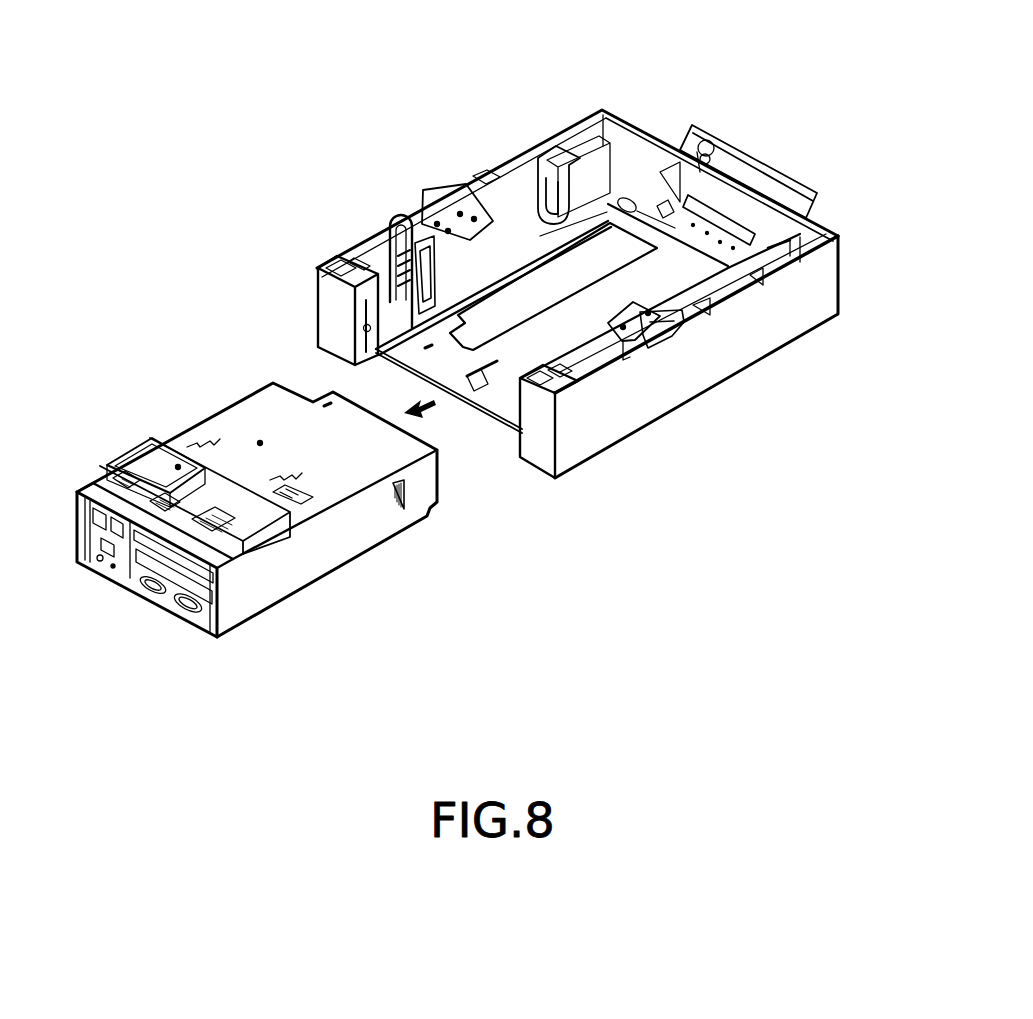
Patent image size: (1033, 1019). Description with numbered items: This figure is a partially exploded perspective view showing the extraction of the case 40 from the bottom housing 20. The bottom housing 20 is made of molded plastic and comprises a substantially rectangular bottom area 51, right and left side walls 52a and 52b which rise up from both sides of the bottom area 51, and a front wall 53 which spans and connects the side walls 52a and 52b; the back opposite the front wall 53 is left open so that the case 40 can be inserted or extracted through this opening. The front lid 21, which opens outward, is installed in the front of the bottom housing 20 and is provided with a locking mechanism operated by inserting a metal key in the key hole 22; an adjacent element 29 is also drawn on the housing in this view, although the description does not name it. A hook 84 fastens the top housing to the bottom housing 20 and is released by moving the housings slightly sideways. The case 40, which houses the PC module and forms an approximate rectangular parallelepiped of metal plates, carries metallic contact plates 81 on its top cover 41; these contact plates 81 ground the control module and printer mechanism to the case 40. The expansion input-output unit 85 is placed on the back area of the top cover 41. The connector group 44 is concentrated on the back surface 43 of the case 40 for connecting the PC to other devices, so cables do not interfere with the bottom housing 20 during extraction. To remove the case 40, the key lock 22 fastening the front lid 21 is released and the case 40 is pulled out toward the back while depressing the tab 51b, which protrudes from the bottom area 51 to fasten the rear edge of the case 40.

The bottom housing 20 is at (853, 287).
The front lid 21 is at (770, 162).
The key hole 22 is at (713, 140).
The slot 29 is at (773, 218).
The case 40 is at (303, 603).
The top cover 41 is at (258, 402).
The back surface 43 is at (123, 562).
The connector group 44 is at (168, 600).
The bottom area 51 is at (418, 362).
The tab 51b is at (476, 392).
The left side wall 52a is at (517, 136).
The right side wall 52b is at (757, 343).
The front wall 53 is at (832, 233).
The contact plates 81 is at (291, 482).
The hook 84 is at (458, 184).
The expansion input-output unit 85 is at (157, 453).